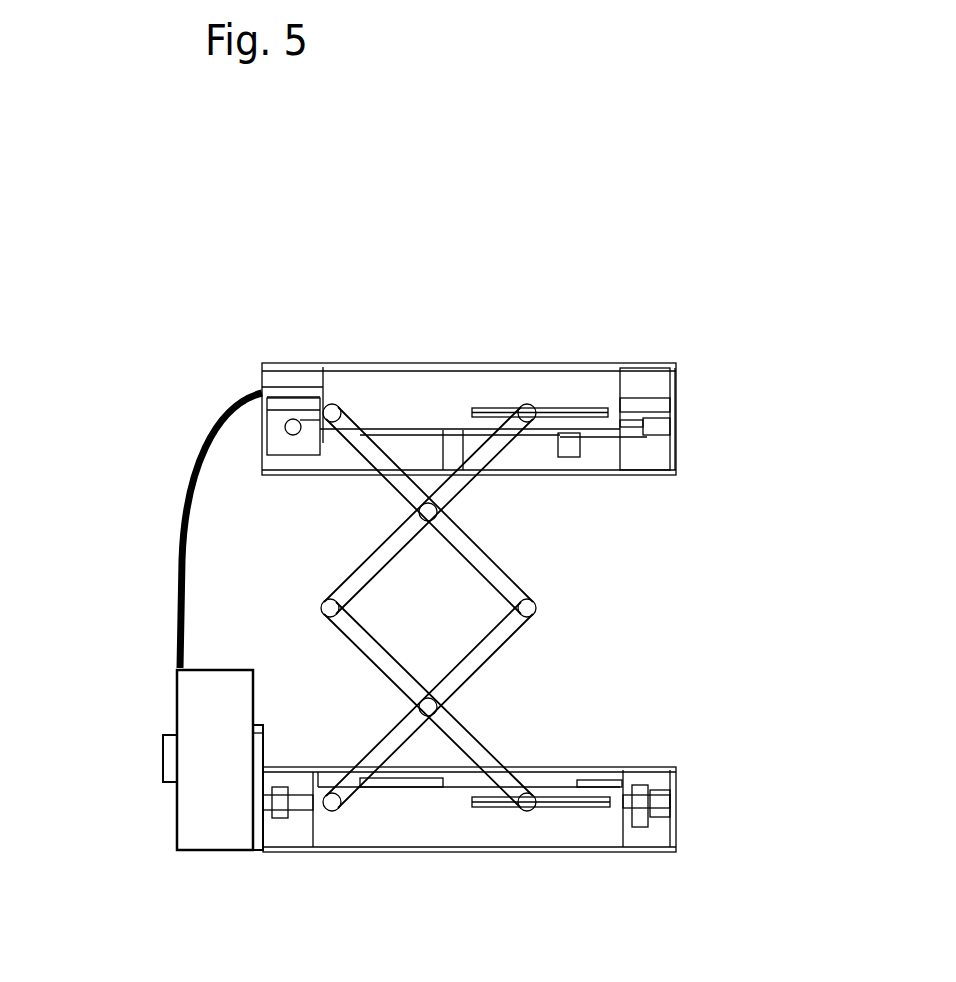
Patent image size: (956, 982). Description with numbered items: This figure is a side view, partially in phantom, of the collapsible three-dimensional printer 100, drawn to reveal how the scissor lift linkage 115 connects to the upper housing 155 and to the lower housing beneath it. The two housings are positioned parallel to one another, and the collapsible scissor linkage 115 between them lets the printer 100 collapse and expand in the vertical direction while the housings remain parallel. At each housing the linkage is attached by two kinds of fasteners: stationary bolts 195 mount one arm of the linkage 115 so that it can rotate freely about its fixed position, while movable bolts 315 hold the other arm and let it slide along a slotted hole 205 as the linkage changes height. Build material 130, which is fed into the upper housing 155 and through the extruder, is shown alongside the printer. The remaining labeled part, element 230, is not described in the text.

The collapsible 3D printer 100 is at (750, 338).
The upper housing 155 is at (428, 386).
The scissor lift linkage 115 is at (488, 648).
The stationary bolts 195 is at (332, 413).
The movable bolts 315 is at (526, 413).
The slotted hole 205 is at (580, 413).
The end fitting 230 is at (282, 807).
The build material 130 is at (210, 695).